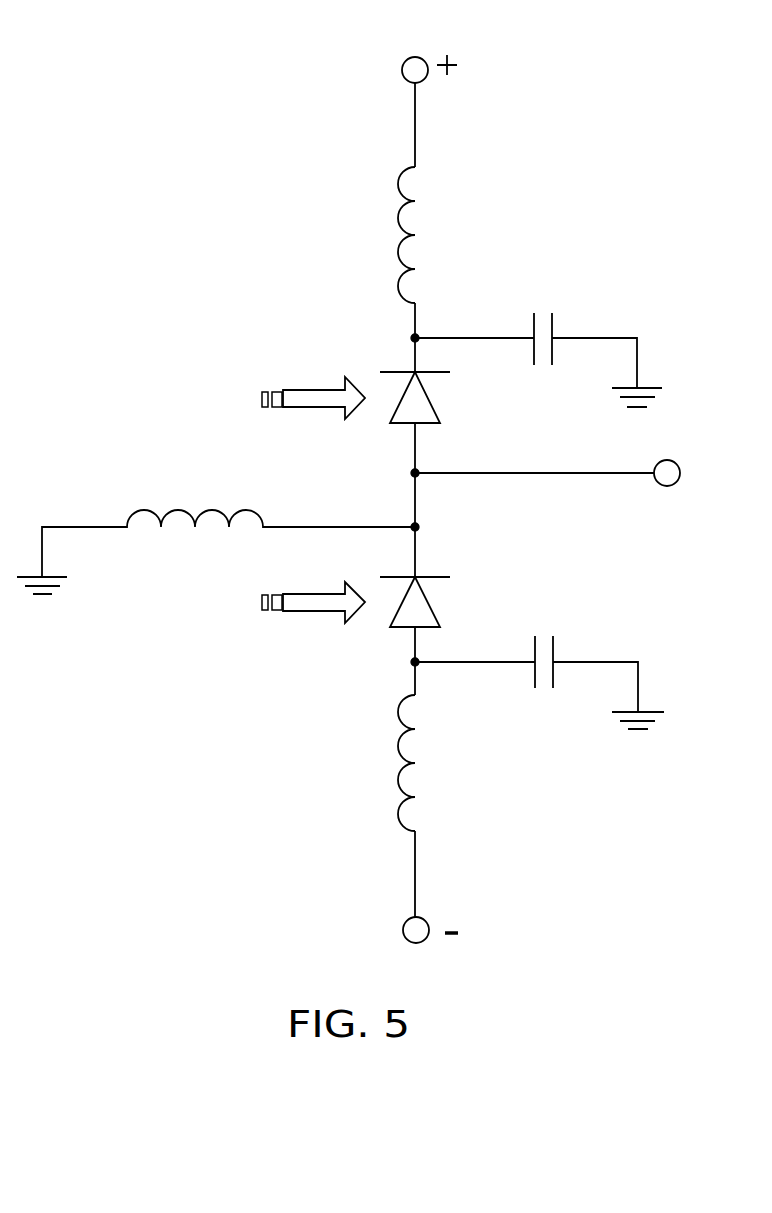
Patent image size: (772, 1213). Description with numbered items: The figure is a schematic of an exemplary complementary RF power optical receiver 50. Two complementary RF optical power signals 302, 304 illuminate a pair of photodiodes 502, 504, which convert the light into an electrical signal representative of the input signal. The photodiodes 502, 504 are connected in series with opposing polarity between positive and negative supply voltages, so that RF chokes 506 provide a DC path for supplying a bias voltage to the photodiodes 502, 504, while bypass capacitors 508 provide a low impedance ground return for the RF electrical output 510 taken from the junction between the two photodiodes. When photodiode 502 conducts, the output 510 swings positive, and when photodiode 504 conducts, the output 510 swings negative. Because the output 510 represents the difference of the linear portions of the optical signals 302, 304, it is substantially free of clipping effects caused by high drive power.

The complementary RF power optical receiver 50 is at (270, 82).
The complementary RF optical power signal 302 is at (310, 389).
The complementary RF optical power signal 304 is at (311, 612).
The photodiode 502 is at (430, 374).
The photodiode 504 is at (440, 577).
The RF choke 506 is at (400, 238).
The bypass capacitor 508 is at (556, 323).
The RF electrical output 510 is at (597, 478).